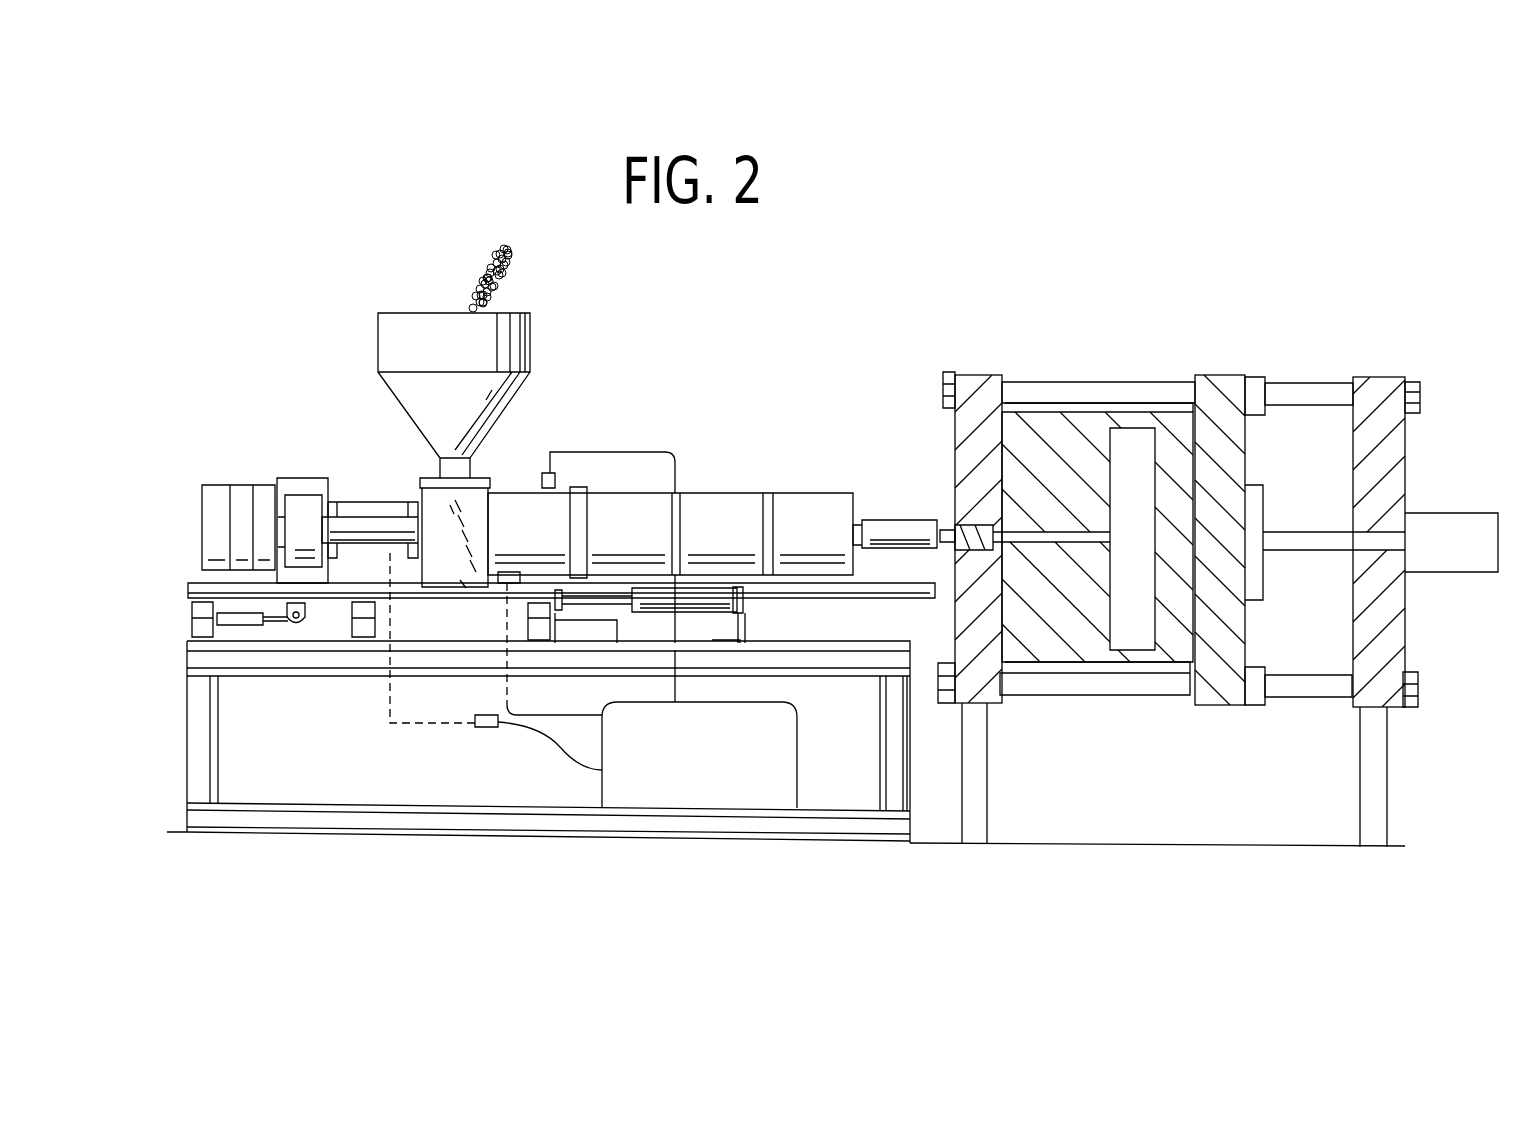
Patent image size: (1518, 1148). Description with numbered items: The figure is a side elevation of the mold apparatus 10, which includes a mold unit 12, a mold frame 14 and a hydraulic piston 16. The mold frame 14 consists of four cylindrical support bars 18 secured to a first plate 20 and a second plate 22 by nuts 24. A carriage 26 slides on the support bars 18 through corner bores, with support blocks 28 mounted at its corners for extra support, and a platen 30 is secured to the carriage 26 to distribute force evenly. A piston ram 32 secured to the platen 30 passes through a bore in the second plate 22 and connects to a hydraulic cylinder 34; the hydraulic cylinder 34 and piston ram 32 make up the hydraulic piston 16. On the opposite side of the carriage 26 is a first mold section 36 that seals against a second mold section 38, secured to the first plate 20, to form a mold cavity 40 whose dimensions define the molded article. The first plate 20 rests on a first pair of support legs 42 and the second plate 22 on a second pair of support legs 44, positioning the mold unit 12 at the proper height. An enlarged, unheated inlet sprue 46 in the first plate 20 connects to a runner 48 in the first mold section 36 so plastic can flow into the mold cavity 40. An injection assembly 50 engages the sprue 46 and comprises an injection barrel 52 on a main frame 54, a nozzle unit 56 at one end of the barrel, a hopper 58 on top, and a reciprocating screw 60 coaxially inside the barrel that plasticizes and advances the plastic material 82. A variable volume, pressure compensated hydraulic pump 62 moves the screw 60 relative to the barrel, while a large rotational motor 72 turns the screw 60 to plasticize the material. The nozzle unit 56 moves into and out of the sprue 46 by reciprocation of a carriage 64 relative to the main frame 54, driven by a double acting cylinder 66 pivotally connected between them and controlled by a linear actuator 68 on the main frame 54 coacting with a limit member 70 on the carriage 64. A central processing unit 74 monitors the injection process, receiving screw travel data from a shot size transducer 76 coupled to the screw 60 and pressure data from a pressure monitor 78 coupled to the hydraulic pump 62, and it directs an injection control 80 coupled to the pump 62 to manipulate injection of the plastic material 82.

The mold apparatus 10 is at (1041, 293).
The mold unit 12 is at (1123, 393).
The mold frame 14 is at (1164, 707).
The hydraulic piston 16 is at (1437, 466).
The support bars 18 is at (1340, 392).
The first plate 20 is at (972, 375).
The second plate 22 is at (1380, 378).
The nuts 24 is at (1420, 398).
The carriage 26 is at (1228, 385).
The support blocks 28 is at (1262, 380).
The platen 30 is at (1255, 590).
The piston ram 32 is at (1293, 540).
The hydraulic cylinder 34 is at (1437, 533).
The first mold section 36 is at (1175, 430).
The second mold section 38 is at (1076, 415).
The mold cavity 40 is at (1135, 635).
The first pair of support legs 42 is at (975, 800).
The second pair of support legs 44 is at (1380, 800).
The inlet sprue 46 is at (952, 548).
The runner 48 is at (1107, 540).
The injection assembly 50 is at (823, 471).
The injection barrel 52 is at (710, 510).
The main frame 54 is at (697, 828).
The nozzle unit 56 is at (913, 520).
The hopper 58 is at (435, 325).
The reciprocating screw 60 is at (375, 503).
The hydraulic pump 62 is at (505, 488).
The carriage 64 is at (195, 580).
The double acting cylinder 66 is at (240, 620).
The linear actuator 68 is at (742, 598).
The limit member 70 is at (560, 612).
The rotational motor 72 is at (240, 493).
The central processing unit 74 is at (797, 745).
The shot size transducer 76 is at (485, 715).
The pressure monitor 78 is at (560, 480).
The injection control 80 is at (510, 572).
The plastic material 82 is at (500, 280).